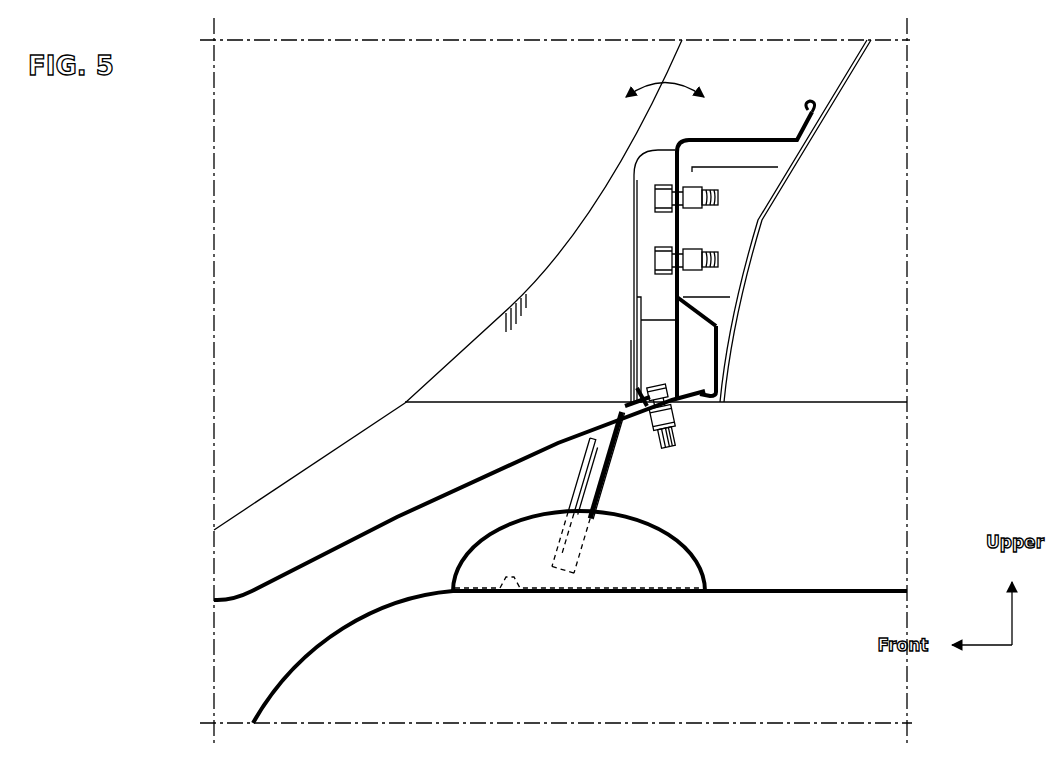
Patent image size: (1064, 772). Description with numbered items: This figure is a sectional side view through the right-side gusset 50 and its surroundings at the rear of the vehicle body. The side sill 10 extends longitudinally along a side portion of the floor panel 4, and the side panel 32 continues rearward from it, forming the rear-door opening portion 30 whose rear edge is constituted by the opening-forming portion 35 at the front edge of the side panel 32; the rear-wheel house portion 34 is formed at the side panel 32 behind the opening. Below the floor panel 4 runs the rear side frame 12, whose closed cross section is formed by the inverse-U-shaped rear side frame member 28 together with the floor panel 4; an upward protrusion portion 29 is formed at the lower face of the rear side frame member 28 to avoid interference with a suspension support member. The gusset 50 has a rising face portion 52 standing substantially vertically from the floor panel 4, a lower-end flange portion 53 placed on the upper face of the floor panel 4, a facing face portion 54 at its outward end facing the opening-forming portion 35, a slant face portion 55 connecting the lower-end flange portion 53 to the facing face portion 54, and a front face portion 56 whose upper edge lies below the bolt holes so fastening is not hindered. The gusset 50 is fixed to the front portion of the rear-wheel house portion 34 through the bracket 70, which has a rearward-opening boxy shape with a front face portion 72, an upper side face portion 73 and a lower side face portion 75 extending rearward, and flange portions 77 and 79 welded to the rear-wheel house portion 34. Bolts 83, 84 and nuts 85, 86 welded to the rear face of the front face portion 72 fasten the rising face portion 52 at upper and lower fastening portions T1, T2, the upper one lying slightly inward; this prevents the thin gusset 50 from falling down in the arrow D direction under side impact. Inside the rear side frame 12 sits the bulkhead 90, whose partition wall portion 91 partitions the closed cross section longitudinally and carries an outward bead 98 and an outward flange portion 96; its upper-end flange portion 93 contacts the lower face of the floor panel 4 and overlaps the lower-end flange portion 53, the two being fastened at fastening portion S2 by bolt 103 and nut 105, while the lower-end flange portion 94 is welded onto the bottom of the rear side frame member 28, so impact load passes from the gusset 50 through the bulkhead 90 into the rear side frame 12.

The floor panel 4 is at (397, 517).
The side sill 10 is at (278, 497).
The rear side frame 12 is at (778, 598).
The rear side frame member 28 is at (845, 597).
The upward protrusion portion 29 is at (690, 560).
The rear-door opening portion 30 is at (359, 206).
The side panel 32 is at (636, 126).
The rear-wheel house portion 34 is at (839, 80).
The opening-forming portion 35 is at (748, 50).
The gusset 50 is at (610, 211).
The rising face portion 52 is at (668, 228).
The lower-end flange portion 53 is at (637, 386).
The facing face portion 54 is at (660, 155).
The slant face portion 55 is at (645, 328).
The front face portion 56 is at (633, 355).
The bracket 70 is at (760, 128).
The front face portion 72 is at (698, 212).
The upper side face portion 73 is at (740, 138).
The lower side face portion 75 is at (718, 308).
The flange portion 77 is at (822, 103).
The flange portion 79 is at (718, 338).
The bolt 83 is at (655, 200).
The bolt 84 is at (655, 260).
The nut 85 is at (697, 183).
The nut 86 is at (697, 277).
The bulkhead 90 is at (566, 481).
The partition wall portion 91 is at (612, 470).
The upper-end flange portion 93 is at (640, 425).
The lower-end flange portion 94 is at (494, 598).
The outward flange portion 96 is at (580, 465).
The outward bead 98 is at (570, 493).
The bolt 103 is at (667, 446).
The nut 105 is at (676, 423).
The arrow D direction D is at (666, 78).
The fastening portion S2 is at (682, 416).
The upper fastening portion T1 is at (698, 185).
The lower fastening portion T2 is at (706, 253).